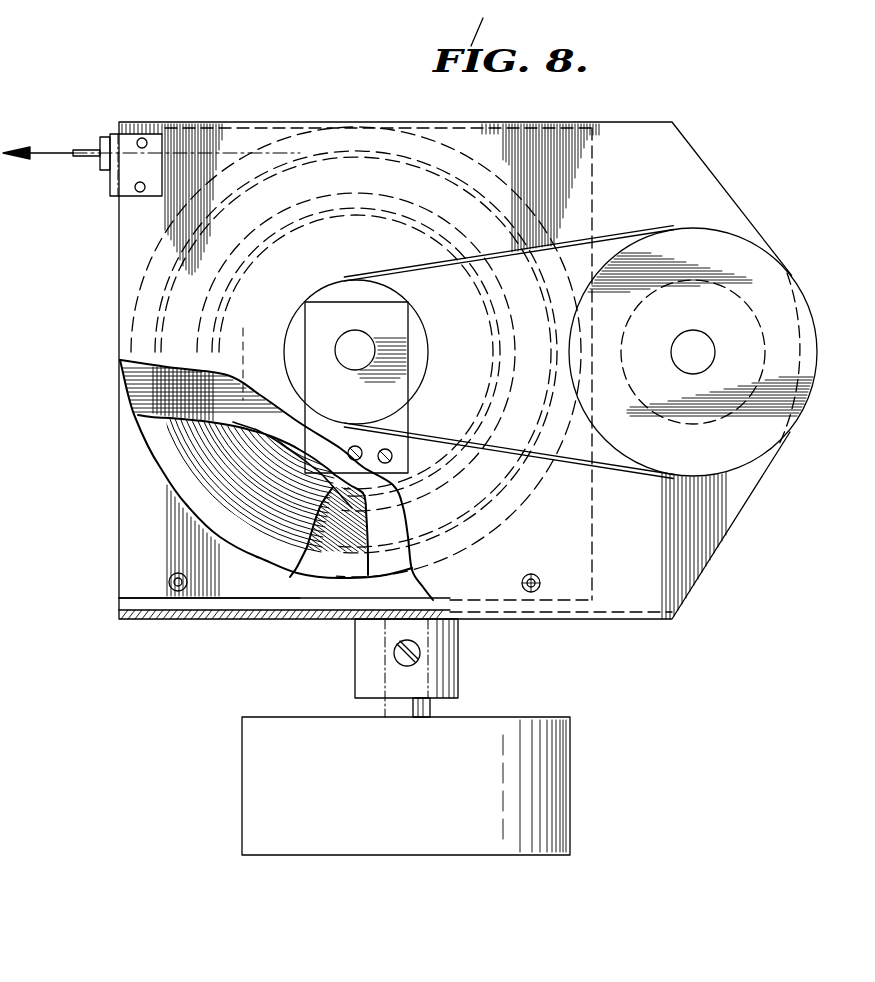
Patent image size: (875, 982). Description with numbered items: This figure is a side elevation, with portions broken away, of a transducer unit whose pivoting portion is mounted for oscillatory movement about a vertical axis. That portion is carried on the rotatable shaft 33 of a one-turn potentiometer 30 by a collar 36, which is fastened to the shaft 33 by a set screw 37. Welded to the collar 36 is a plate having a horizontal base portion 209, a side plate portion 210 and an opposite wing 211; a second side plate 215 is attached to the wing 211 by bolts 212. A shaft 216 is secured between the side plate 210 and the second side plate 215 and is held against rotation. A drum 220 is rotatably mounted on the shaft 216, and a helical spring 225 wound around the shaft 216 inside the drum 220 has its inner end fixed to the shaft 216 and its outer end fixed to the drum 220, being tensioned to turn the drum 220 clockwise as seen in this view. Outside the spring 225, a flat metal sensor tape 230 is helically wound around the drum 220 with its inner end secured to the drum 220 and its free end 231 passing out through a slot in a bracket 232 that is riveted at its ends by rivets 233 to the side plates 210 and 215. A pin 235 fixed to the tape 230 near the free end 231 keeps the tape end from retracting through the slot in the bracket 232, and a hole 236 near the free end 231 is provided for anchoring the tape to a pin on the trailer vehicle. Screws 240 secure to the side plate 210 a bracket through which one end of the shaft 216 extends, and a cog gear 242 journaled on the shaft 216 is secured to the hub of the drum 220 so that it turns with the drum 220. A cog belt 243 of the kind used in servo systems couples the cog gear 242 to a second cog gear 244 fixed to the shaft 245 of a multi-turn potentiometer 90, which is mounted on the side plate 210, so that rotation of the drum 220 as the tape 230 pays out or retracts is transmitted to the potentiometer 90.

The one-turn potentiometer 30 is at (232, 784).
The rotatable shaft 33 is at (413, 707).
The collar 36 is at (353, 641).
The set screw 37 is at (420, 653).
The multi-turn potentiometer 90 is at (745, 416).
The horizontal base portion 209 is at (277, 617).
The side plate portion 210 is at (127, 253).
The opposite wing 211 is at (130, 605).
The bolts 212 is at (180, 591).
The second side plate 215 is at (132, 547).
The shaft 216 is at (370, 346).
The drum 220 is at (183, 480).
The helical spring 225 is at (290, 577).
The flat metal sensor tape 230 is at (187, 458).
The free end 231 is at (77, 156).
The bracket 232 is at (113, 188).
The rivets 233 is at (143, 141).
The pin 235 is at (106, 136).
The hole 236 is at (88, 151).
The screws 240 is at (355, 448).
The cog gear 242 is at (337, 288).
The cog belt 243 is at (582, 460).
The second cog gear 244 is at (770, 292).
The shaft 245 is at (700, 343).